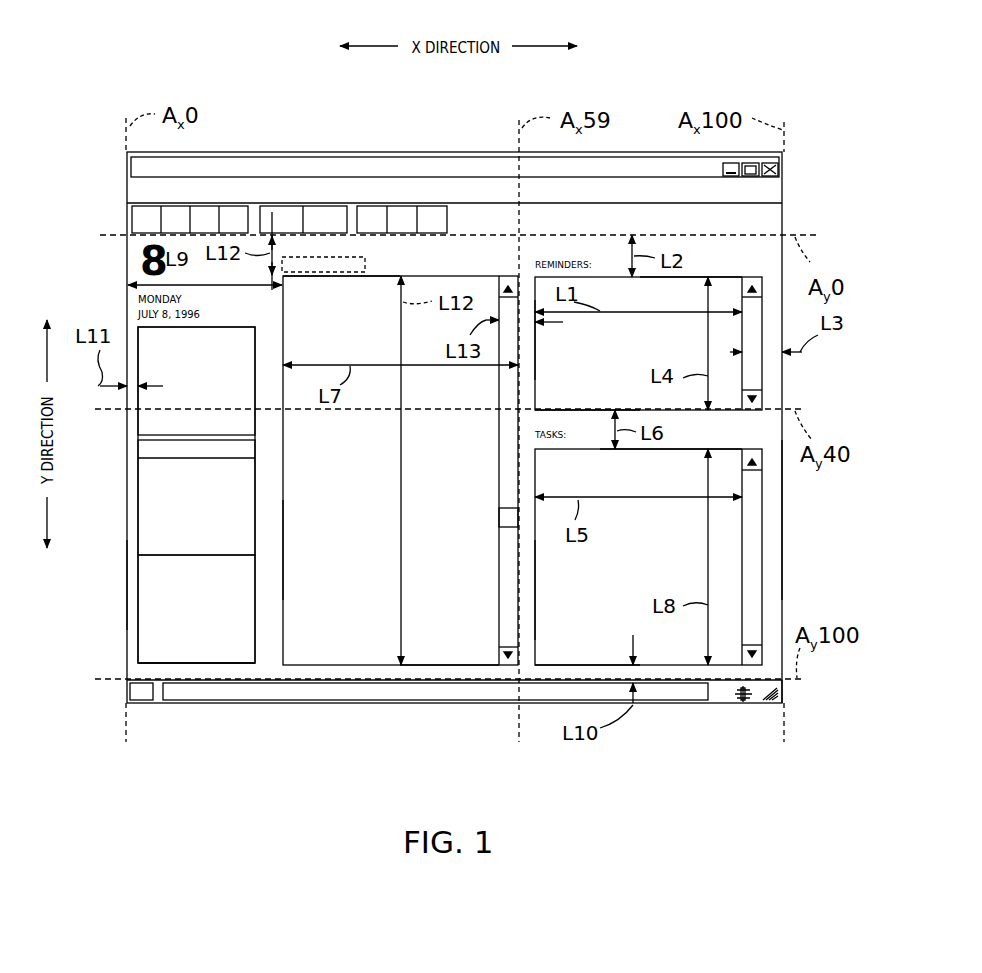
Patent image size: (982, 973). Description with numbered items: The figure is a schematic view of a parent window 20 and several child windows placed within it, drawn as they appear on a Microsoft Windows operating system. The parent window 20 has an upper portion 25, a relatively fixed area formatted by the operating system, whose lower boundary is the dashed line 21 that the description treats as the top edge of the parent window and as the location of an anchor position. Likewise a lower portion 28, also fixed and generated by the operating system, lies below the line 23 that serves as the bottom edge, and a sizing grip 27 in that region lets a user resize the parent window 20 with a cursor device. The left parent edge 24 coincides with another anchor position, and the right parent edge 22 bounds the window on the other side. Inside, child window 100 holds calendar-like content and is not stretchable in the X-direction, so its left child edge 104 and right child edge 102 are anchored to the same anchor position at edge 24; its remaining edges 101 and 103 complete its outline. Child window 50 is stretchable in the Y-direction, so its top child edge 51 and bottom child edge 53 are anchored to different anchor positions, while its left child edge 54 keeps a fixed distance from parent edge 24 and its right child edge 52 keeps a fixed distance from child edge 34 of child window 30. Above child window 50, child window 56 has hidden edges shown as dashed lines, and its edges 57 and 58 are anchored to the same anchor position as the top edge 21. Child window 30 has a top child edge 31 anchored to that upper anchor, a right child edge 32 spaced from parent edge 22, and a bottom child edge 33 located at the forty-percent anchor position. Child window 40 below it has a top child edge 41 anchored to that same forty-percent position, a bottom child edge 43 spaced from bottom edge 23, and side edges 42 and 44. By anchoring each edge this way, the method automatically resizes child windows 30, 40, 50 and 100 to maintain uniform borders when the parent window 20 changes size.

The parent window 20 is at (688, 92).
The top edge of parent window 21 is at (590, 235).
The right edge of parent window 22 is at (782, 546).
The bottom edge of parent window 23 is at (266, 680).
The left edge of parent window 24 is at (125, 583).
The upper portion 25 is at (812, 155).
The sizing grip 27 is at (772, 702).
The lower portion 28 is at (812, 682).
The child window 30 is at (617, 392).
The child edge 31 is at (688, 278).
The child edge 32 is at (762, 331).
The child edge 33 is at (553, 409).
The child edge 34 is at (537, 341).
The child window 40 is at (634, 581).
The child edge 41 is at (665, 451).
The tasks panel scroll bar 42 is at (762, 541).
The child edge 43 is at (580, 664).
The tasks panel left edge 44 is at (537, 591).
The child window 50 is at (355, 637).
The child edge 51 is at (303, 278).
The child edge 52 is at (518, 566).
The child edge 53 is at (447, 664).
The child edge 54 is at (283, 551).
The child window 56 is at (371, 278).
The child edge 57 is at (356, 264).
The child edge 58 is at (340, 278).
The child window 100 is at (218, 538).
The June calendar 101 is at (212, 331).
The child edge 102 is at (253, 605).
The calendar panel bottom edge 103 is at (210, 662).
The child edge 104 is at (138, 495).